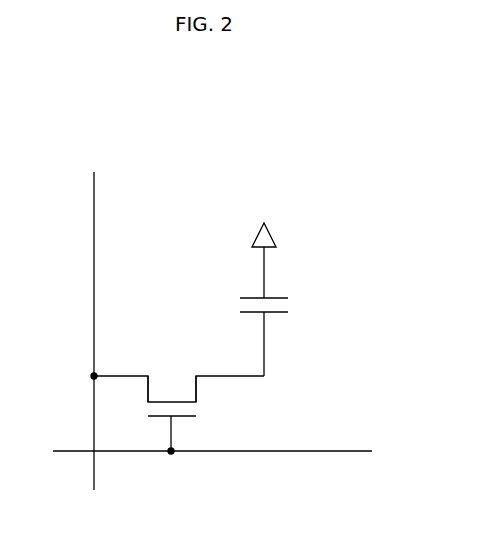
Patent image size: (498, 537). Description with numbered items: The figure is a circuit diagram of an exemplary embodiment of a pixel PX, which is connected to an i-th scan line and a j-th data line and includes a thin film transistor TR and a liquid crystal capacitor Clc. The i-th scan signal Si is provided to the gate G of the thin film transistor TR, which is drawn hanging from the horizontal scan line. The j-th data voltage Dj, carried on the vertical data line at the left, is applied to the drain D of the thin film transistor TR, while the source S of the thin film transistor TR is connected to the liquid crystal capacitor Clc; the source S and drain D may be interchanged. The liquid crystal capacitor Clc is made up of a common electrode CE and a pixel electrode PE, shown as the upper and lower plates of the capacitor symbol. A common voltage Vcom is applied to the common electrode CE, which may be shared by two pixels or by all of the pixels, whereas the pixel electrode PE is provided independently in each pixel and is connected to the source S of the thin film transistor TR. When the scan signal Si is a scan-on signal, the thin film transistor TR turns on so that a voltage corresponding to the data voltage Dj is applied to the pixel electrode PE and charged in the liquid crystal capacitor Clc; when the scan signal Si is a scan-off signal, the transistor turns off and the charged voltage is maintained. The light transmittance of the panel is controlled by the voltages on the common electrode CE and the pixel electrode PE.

The pixel PX is at (240, 121).
The j-th data voltage Dj is at (94, 316).
The i-th scan signal Si is at (201, 453).
The thin film transistor TR is at (177, 401).
The drain D is at (140, 375).
The source S is at (203, 375).
The gate G is at (172, 435).
The common voltage Vcom is at (263, 221).
The liquid crystal capacitor Clc is at (286, 311).
The common electrode CE is at (278, 298).
The pixel electrode PE is at (278, 312).